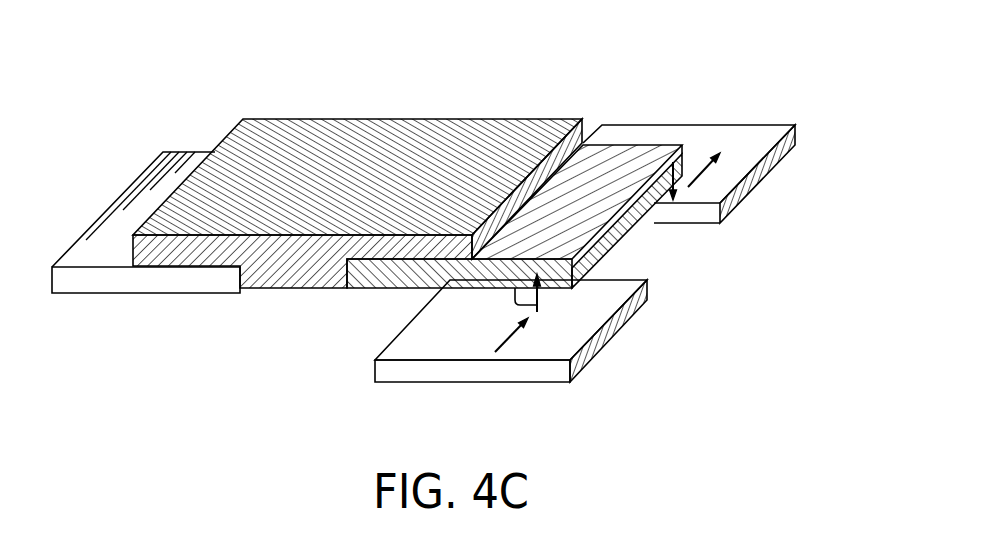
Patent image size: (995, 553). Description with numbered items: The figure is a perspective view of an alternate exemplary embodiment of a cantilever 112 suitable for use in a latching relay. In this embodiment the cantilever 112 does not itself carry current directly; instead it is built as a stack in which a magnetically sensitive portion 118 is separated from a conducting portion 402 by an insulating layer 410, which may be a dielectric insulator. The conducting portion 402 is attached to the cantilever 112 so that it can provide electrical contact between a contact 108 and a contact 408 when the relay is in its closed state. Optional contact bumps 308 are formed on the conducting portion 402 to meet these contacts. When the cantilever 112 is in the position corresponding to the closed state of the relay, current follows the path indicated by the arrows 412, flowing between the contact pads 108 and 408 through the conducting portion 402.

The cantilever 112 is at (526, 67).
The magnetically sensitive portion 118 is at (185, 165).
The insulating layer 410 is at (398, 130).
The conducting portion 402 is at (630, 230).
The arrows 412 is at (668, 227).
The contact 408 is at (725, 173).
The contact 108 is at (567, 330).
The contact bumps 308 is at (515, 295).